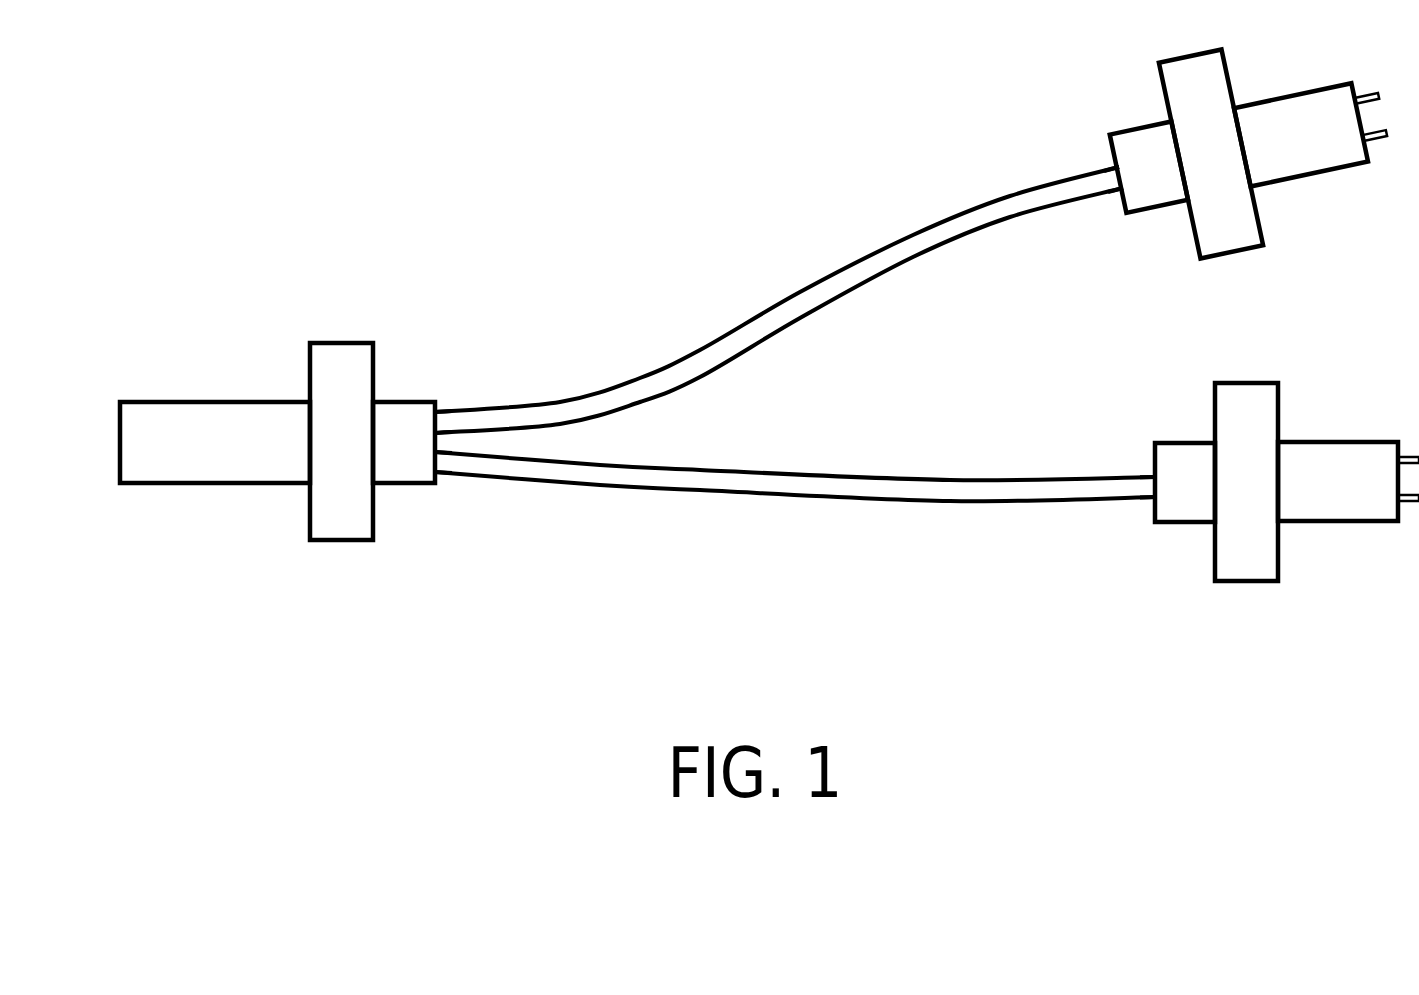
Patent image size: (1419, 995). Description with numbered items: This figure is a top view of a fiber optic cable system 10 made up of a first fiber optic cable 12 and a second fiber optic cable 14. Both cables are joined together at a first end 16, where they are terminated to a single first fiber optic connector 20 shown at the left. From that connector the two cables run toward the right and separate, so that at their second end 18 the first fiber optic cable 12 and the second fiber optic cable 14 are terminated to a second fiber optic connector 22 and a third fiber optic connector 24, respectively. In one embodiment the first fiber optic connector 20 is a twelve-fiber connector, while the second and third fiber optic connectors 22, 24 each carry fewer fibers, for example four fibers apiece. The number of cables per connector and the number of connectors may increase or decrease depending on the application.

The fiber optic cable system 10 is at (757, 218).
The first fiber optic cable 12 is at (765, 488).
The second fiber optic cable 14 is at (913, 257).
The first end 16 is at (452, 418).
The second end 18 is at (1113, 190).
The first fiber optic connector 20 is at (296, 506).
The second fiber optic connector 22 is at (1280, 208).
The third fiber optic connector 24 is at (1299, 558).